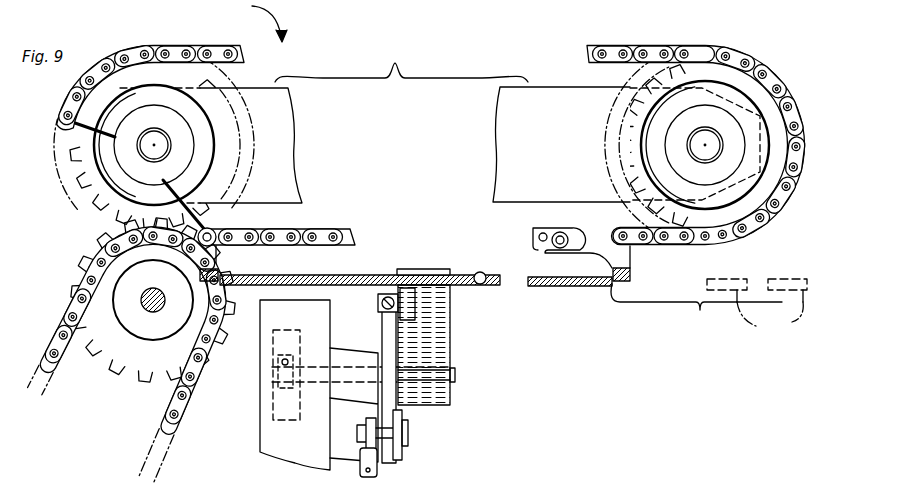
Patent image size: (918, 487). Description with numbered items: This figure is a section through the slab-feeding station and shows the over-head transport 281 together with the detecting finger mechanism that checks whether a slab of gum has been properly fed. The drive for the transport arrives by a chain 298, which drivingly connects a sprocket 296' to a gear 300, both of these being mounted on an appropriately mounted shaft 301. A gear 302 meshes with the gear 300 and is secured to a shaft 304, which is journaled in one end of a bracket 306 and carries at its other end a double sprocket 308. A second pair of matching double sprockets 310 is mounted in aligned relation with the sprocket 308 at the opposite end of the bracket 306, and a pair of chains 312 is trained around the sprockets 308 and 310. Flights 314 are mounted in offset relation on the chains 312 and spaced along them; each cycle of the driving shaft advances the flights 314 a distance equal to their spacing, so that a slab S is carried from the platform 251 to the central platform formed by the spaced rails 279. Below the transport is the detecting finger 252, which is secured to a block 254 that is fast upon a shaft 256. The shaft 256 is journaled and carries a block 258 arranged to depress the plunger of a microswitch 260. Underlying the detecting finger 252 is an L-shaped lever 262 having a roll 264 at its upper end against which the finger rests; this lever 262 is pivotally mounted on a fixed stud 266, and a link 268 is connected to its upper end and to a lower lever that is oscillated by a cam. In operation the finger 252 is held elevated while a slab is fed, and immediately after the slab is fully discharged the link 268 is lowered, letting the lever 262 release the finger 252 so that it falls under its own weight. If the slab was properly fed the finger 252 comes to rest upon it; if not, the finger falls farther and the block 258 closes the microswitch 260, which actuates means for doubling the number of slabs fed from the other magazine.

The over-head transport 281 is at (246, 24).
The gear 302 is at (83, 187).
The shaft 304 is at (169, 152).
The double sprocket 308 is at (233, 187).
The bracket 306 is at (531, 83).
The double sprockets 310 is at (623, 200).
The chains 312 is at (628, 47).
The sprocket 296' is at (153, 313).
The gear 300 is at (77, 272).
The chain 298 is at (190, 410).
The shaft 301 is at (168, 305).
The flights 314 is at (202, 272).
The slab S is at (362, 274).
The platform 251 is at (481, 285).
The detecting finger 252 is at (430, 270).
The rails 279 is at (757, 310).
The block 258 is at (277, 355).
The microswitch 260 is at (300, 333).
The L-shaped lever 262 is at (378, 408).
The shaft 256 is at (398, 337).
The block 254 is at (440, 405).
The roll 264 is at (408, 318).
The stud 266 is at (407, 442).
The link 268 is at (378, 468).